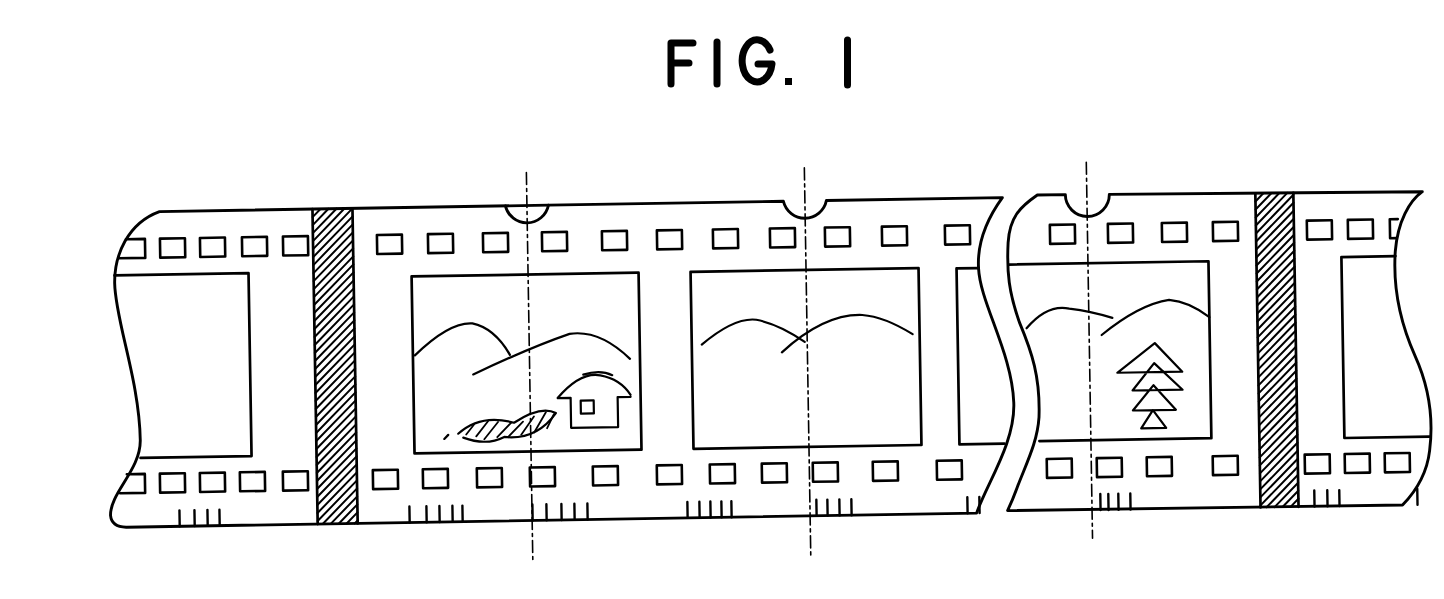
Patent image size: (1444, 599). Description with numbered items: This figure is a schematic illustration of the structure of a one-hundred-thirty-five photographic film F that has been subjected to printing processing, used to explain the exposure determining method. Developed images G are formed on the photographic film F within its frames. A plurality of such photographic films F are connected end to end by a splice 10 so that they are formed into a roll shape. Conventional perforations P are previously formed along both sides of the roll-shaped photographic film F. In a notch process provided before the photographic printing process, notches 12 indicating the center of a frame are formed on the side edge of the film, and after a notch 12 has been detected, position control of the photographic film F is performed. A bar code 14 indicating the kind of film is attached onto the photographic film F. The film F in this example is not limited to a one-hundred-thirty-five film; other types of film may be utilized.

The photographic film F is at (1201, 203).
The perforations P is at (897, 244).
The developed images G is at (745, 290).
The notch 12 is at (540, 210).
The bar code 14 is at (420, 520).
The splice 10 is at (1273, 499).